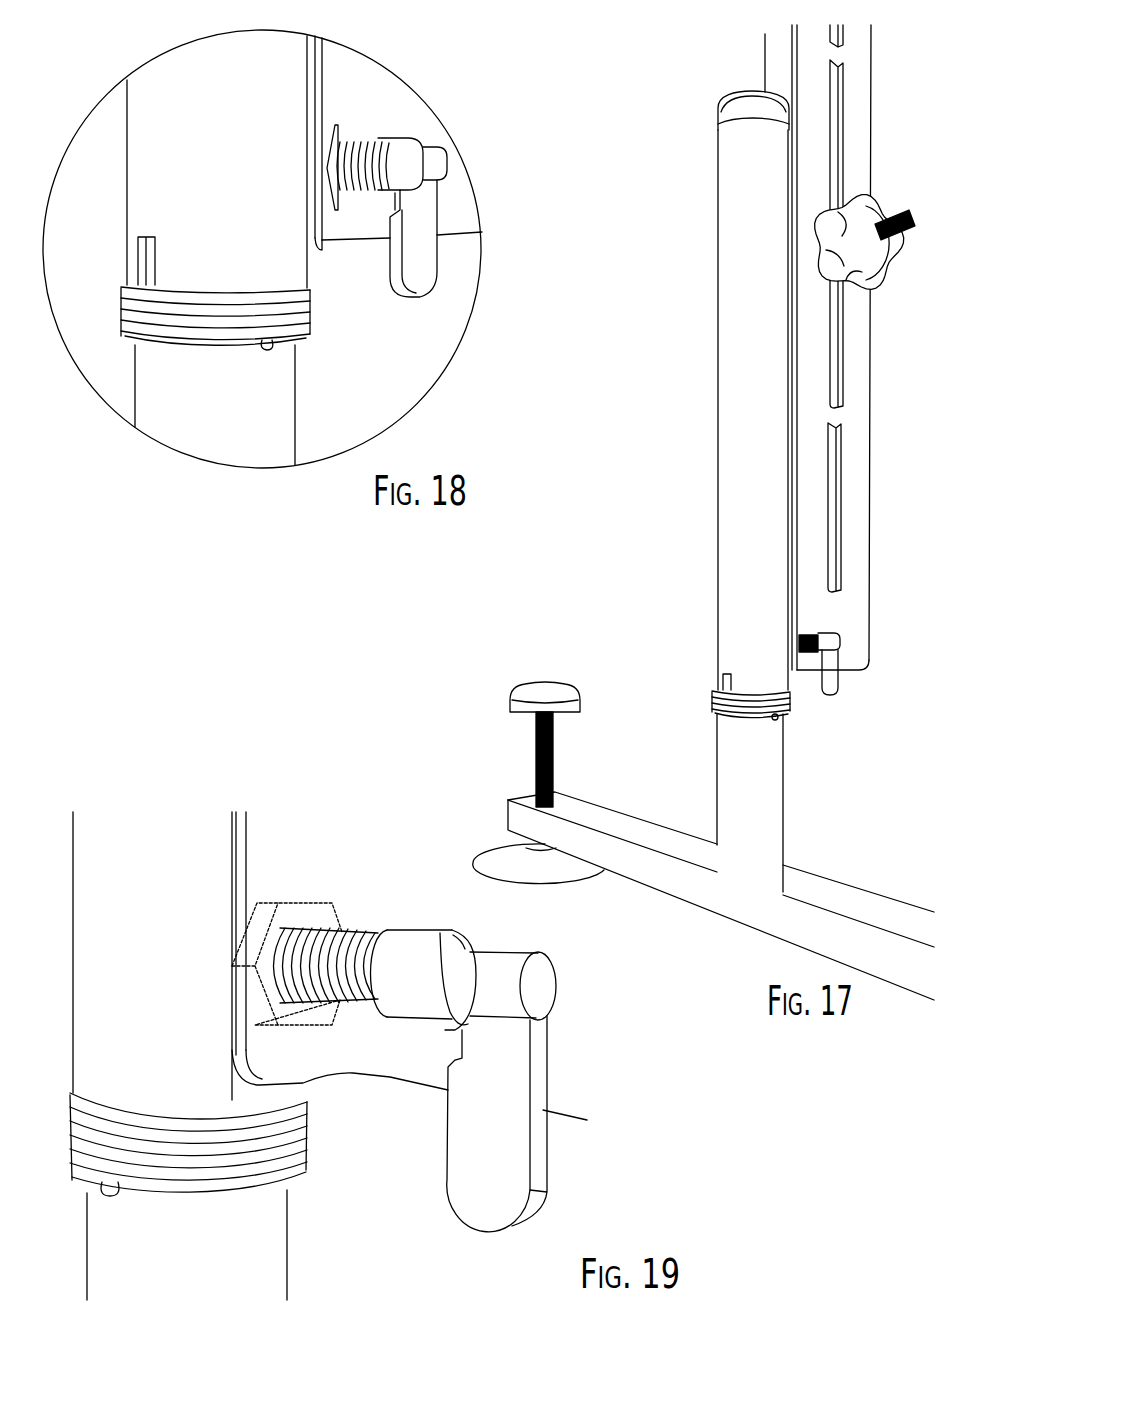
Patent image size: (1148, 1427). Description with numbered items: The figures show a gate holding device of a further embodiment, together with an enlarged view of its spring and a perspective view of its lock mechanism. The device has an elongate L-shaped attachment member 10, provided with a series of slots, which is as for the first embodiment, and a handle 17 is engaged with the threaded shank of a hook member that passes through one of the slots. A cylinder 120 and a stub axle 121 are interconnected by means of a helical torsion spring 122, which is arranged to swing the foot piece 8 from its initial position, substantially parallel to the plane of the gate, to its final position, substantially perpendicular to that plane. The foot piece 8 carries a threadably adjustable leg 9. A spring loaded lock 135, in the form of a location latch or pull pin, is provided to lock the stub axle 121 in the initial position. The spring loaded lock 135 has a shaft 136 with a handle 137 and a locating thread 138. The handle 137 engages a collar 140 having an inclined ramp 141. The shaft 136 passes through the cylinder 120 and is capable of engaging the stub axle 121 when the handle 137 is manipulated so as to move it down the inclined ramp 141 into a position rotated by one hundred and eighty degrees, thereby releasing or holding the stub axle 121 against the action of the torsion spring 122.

In FIG. 17, the foot piece 8 is at (655, 822).
In FIG. 17, the threadably adjustable leg 9 is at (553, 747).
In FIG. 17, the L-shaped attachment member 10 is at (770, 33).
In FIG. 19, the L-shaped attachment member 10 is at (263, 830).
In FIG. 17, the handle 17 is at (835, 230).
In FIG. 18, the cylinder 120 is at (278, 80).
In FIG. 17, the cylinder 120 is at (730, 327).
In FIG. 18, the stub axle 121 is at (280, 423).
In FIG. 17, the stub axle 121 is at (752, 792).
In FIG. 19, the stub axle 121 is at (187, 1245).
In FIG. 18, the helical torsion spring 122 is at (203, 313).
In FIG. 17, the helical torsion spring 122 is at (733, 684).
In FIG. 19, the helical torsion spring 122 is at (107, 1100).
In FIG. 17, the spring loaded lock 135 is at (816, 692).
In FIG. 19, the spring loaded lock 135 is at (574, 1055).
In FIG. 19, the shaft 136 is at (515, 968).
In FIG. 19, the handle 137 is at (455, 1152).
In FIG. 19, the locating thread 138 is at (340, 933).
In FIG. 19, the collar 140 is at (410, 940).
In FIG. 19, the inclined ramp 141 is at (447, 990).